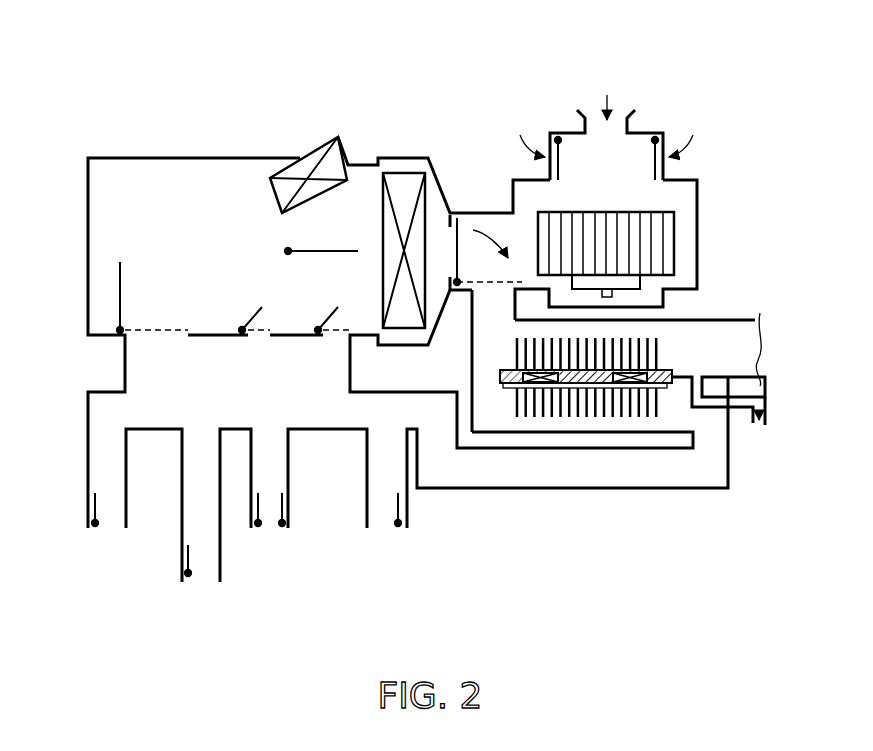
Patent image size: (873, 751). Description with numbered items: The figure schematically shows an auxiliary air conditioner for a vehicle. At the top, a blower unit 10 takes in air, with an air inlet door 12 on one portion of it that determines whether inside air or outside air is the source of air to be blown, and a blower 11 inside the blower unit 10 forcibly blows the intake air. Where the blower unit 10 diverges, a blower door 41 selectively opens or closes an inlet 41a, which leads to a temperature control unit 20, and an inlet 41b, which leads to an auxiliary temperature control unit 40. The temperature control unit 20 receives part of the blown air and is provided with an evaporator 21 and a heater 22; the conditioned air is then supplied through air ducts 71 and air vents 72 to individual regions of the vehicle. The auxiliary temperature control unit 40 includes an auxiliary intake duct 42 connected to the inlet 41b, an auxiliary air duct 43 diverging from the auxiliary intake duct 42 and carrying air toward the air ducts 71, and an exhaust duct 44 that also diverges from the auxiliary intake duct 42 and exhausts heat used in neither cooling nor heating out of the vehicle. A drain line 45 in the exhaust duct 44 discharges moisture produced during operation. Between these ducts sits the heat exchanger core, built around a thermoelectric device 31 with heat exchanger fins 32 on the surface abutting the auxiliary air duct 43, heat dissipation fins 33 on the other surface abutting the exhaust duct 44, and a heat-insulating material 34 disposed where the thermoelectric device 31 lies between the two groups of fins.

The blower unit 10 is at (583, 160).
The blower 11 is at (670, 233).
The air inlet door 12 is at (652, 144).
The temperature control unit 20 is at (157, 140).
The evaporator 21 is at (403, 172).
The heater 22 is at (297, 158).
The thermoelectric device 31 is at (630, 388).
The heat exchanger fins 32 is at (600, 395).
The heat dissipation fins 33 is at (660, 345).
The heat-insulating material 34 is at (670, 388).
The auxiliary temperature control unit 40 is at (626, 436).
The blower door 41 is at (459, 246).
The inlet 41a is at (450, 221).
The inlet 41b is at (522, 388).
The auxiliary intake duct 42 is at (496, 306).
The auxiliary air duct 43 is at (712, 490).
The exhaust duct 44 is at (748, 347).
The drain line 45 is at (759, 426).
The air ducts 71 is at (148, 427).
The air vents 72 is at (212, 574).